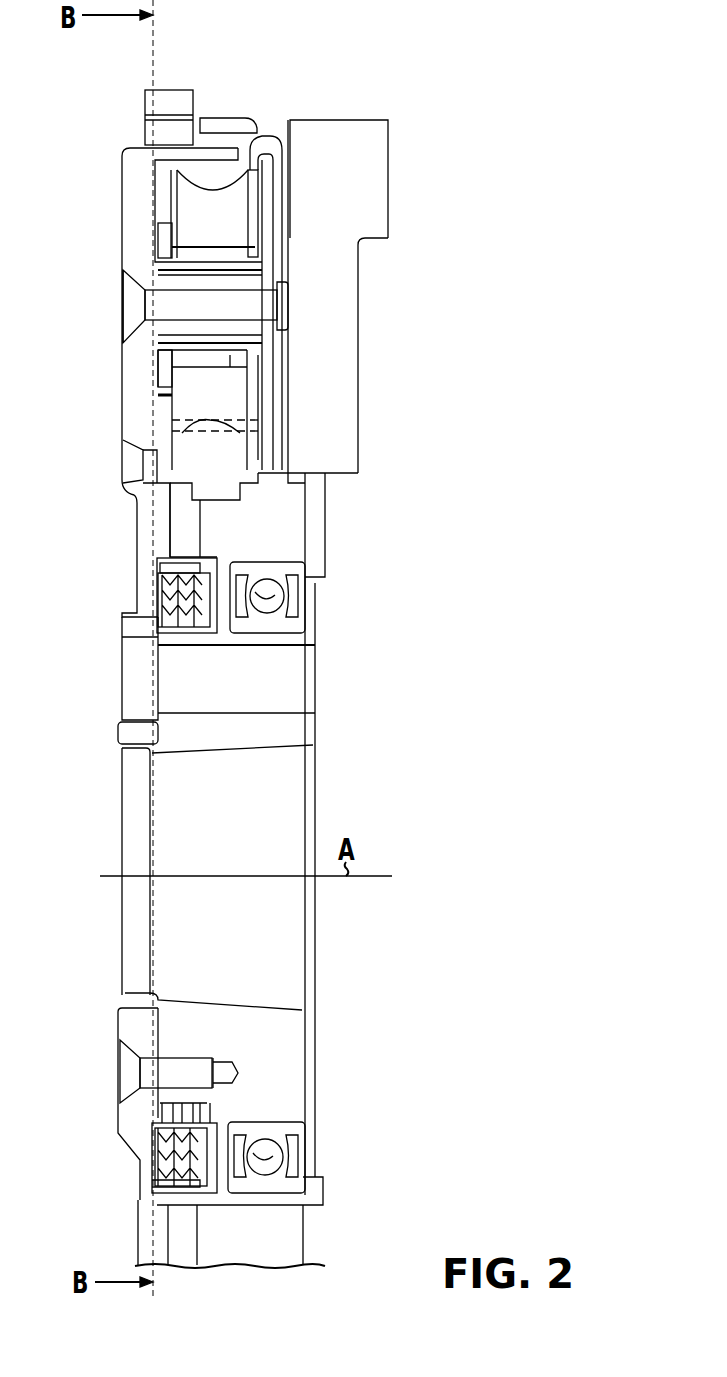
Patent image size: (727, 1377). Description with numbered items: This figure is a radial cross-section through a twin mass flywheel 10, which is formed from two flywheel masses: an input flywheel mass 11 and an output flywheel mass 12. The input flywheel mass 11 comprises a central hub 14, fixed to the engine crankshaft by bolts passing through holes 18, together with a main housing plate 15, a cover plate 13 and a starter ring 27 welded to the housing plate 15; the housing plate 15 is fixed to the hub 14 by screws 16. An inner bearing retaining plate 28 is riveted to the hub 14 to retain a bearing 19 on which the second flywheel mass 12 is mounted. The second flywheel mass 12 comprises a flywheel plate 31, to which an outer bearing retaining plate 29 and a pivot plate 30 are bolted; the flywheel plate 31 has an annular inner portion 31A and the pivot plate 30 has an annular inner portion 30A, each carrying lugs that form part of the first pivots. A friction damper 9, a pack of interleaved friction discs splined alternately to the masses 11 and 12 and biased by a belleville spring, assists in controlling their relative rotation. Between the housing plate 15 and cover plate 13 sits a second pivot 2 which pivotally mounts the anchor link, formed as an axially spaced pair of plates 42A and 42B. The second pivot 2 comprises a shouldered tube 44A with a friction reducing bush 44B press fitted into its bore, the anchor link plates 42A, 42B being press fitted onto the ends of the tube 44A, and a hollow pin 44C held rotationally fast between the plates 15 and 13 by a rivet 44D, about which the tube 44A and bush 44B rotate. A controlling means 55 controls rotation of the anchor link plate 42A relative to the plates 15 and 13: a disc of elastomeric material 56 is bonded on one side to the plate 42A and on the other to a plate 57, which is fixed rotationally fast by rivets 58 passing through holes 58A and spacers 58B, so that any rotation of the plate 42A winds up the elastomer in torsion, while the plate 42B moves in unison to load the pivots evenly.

The second pivot 2 is at (275, 269).
The friction damper 9 is at (140, 612).
The twin mass flywheel 10 is at (420, 131).
The flywheel mass 11 is at (130, 197).
The flywheel mass 12 is at (378, 186).
The cover plate 13 is at (240, 117).
The central hub 14 is at (245, 735).
The main housing plate 15 is at (130, 232).
The screws 16 is at (125, 1062).
The holes 18 is at (290, 690).
The bearing 19 is at (268, 596).
The starter ring 27 is at (180, 98).
The inner bearing retaining plate 28 is at (310, 633).
The outer bearing retaining plate 29 is at (316, 537).
The pivot plate 30 is at (185, 518).
The annular inner portion 30A is at (170, 545).
The flywheel plate 31 is at (380, 223).
The annular inner portion 31A is at (285, 503).
The anchor link plate 42A is at (252, 170).
The anchor link plate 42B is at (157, 255).
The shouldered tube 44A is at (230, 357).
The friction reducing bush 44B is at (242, 347).
The hollow pin 44C is at (258, 332).
The rivet 44D is at (132, 318).
The controlling means 55 is at (160, 398).
The disc of elastomeric material 56 is at (178, 377).
The plate 57 is at (173, 407).
The rivets 58 is at (282, 433).
The holes 58A is at (157, 430).
The spacers 58B is at (143, 483).